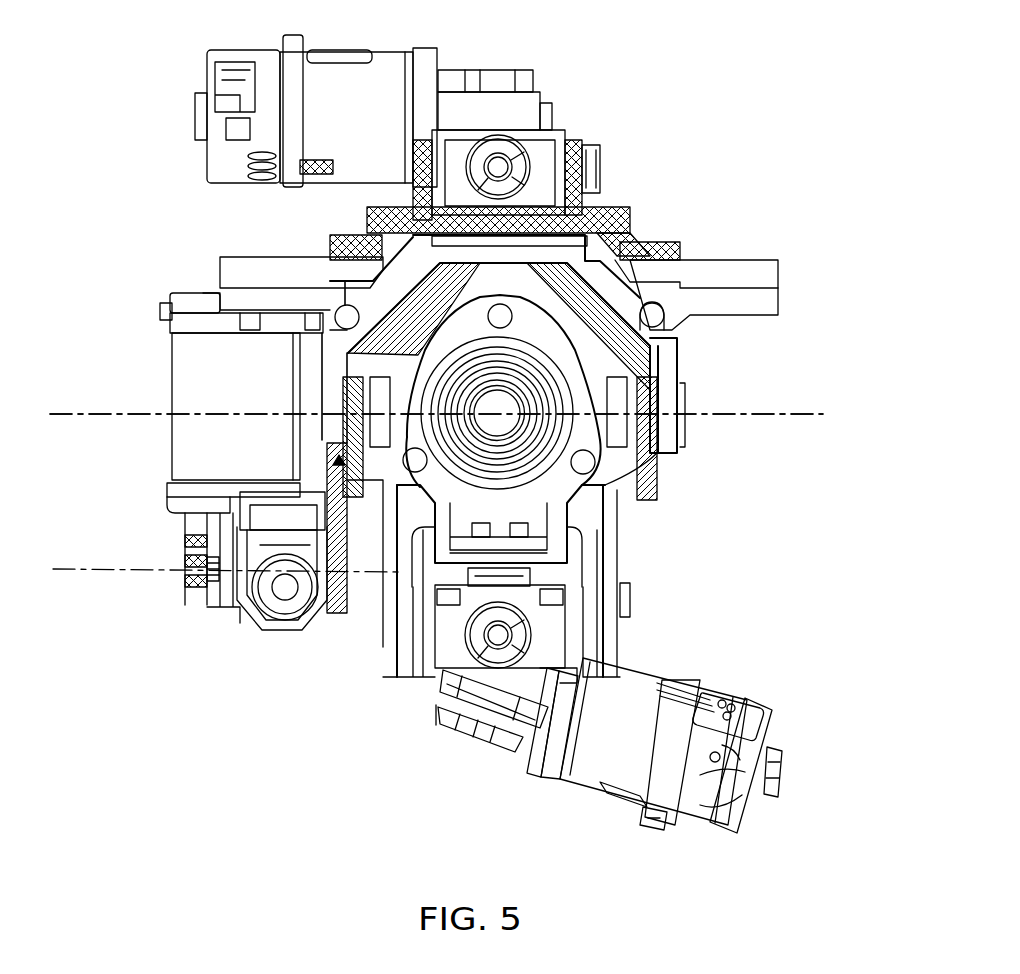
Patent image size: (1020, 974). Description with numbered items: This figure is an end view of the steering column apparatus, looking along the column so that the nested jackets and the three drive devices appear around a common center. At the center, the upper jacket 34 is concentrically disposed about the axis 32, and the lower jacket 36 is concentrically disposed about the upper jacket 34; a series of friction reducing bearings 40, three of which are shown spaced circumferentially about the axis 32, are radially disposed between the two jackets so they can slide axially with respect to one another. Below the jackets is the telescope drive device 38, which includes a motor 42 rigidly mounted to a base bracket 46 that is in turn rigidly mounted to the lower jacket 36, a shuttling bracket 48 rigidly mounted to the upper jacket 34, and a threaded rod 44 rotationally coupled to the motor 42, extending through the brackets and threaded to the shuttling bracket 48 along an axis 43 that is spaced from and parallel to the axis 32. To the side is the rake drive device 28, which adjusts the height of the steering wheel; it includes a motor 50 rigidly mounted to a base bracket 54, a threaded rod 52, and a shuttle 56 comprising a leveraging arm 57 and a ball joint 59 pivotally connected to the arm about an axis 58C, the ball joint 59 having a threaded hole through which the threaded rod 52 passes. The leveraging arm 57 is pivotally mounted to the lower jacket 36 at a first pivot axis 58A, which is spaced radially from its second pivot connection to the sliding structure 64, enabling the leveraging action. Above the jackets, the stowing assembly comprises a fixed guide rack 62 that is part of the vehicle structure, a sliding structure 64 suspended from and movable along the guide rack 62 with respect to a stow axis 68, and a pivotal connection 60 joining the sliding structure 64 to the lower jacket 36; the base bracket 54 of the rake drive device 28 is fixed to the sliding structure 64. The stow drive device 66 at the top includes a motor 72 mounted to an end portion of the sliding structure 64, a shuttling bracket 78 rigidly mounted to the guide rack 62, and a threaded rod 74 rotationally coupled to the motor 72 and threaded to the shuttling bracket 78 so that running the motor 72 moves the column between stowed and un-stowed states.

The rake drive device 28 is at (152, 451).
The axis 32 is at (560, 405).
The upper jacket 34 is at (497, 413).
The lower jacket 36 is at (612, 630).
The telescope drive device 38 is at (760, 683).
The friction reducing bearings 40 is at (506, 308).
The motor 42 is at (694, 677).
The axis 43 is at (497, 655).
The threaded rod 44 is at (480, 633).
The base bracket 46 is at (597, 555).
The shuttling bracket 48 is at (414, 688).
The motor 50 is at (170, 350).
The threaded rod 52 is at (283, 606).
The base bracket 54 is at (190, 578).
The shuttle 56 is at (200, 540).
The leveraging arm 57 is at (338, 620).
The first pivot axis 58A is at (805, 416).
The axis 58C is at (62, 602).
The ball joint 59 is at (292, 620).
The pivotal connection 60 is at (332, 620).
The guide rack 62 is at (778, 275).
The sliding structure 64 is at (622, 243).
The stow drive device 66 is at (562, 100).
The stow axis 68 is at (515, 237).
The motor 72 is at (213, 165).
The threaded rod 74 is at (492, 148).
The shuttling bracket 78 is at (586, 141).